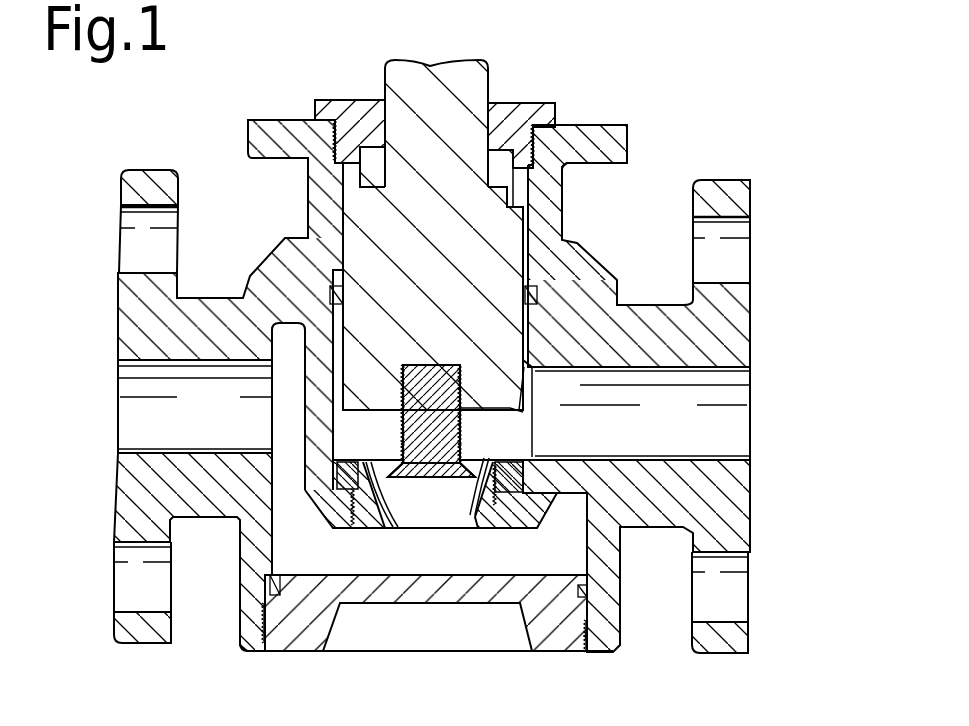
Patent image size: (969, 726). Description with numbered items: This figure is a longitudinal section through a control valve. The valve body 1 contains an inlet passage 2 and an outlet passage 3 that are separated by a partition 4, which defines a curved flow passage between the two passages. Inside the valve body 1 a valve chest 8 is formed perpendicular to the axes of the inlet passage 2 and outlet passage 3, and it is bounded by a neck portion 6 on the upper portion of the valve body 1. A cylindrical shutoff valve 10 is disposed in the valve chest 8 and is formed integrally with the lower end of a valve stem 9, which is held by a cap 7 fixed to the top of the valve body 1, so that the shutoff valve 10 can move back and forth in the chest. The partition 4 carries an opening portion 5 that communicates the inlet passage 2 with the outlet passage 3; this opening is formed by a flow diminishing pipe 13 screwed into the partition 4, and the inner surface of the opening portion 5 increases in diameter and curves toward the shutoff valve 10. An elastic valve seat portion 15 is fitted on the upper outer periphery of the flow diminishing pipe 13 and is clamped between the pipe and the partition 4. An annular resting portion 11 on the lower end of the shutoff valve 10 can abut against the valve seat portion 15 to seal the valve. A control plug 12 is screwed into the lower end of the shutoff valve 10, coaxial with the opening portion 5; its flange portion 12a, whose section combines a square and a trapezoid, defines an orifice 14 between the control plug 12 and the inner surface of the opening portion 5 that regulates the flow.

The valve body 1 is at (606, 271).
The inlet passage 2 is at (132, 408).
The outlet passage 3 is at (740, 415).
The partition 4 is at (327, 516).
The opening portion 5 is at (467, 515).
The neck portion 6 is at (560, 193).
The cap 7 is at (553, 102).
The valve chest 8 is at (522, 196).
The valve stem 9 is at (491, 82).
The shutoff valve 10 is at (527, 381).
The annular resting portion 11 is at (537, 409).
The control plug 12 is at (460, 437).
The flange portion 12a is at (465, 482).
The flow diminishing pipe 13 is at (395, 520).
The orifice 14 is at (387, 460).
The valve seat portion 15 is at (530, 456).